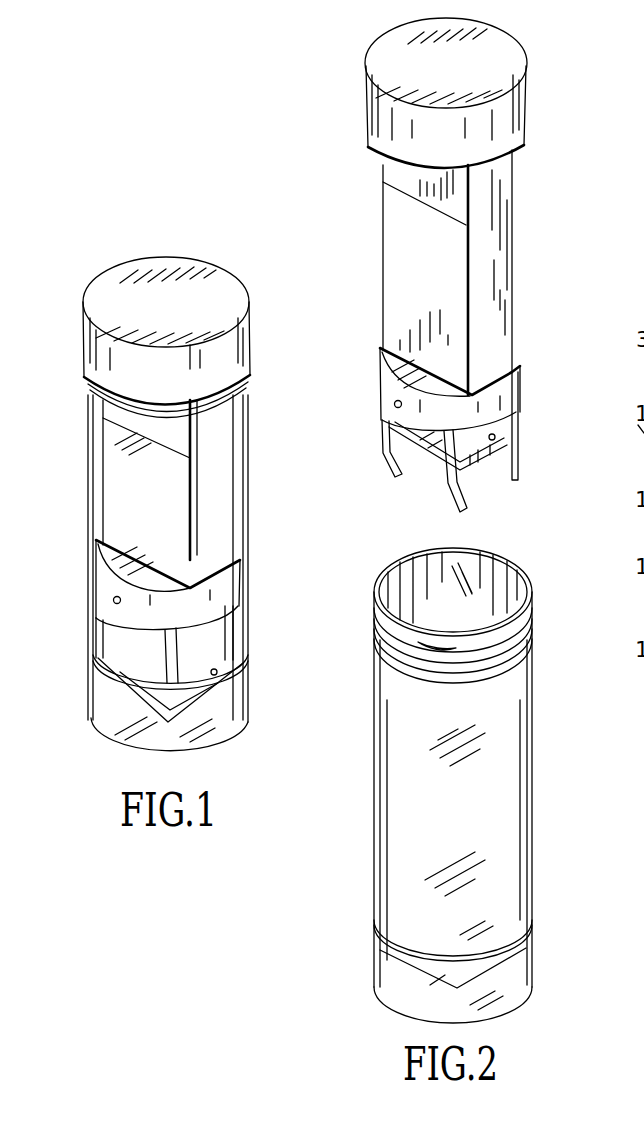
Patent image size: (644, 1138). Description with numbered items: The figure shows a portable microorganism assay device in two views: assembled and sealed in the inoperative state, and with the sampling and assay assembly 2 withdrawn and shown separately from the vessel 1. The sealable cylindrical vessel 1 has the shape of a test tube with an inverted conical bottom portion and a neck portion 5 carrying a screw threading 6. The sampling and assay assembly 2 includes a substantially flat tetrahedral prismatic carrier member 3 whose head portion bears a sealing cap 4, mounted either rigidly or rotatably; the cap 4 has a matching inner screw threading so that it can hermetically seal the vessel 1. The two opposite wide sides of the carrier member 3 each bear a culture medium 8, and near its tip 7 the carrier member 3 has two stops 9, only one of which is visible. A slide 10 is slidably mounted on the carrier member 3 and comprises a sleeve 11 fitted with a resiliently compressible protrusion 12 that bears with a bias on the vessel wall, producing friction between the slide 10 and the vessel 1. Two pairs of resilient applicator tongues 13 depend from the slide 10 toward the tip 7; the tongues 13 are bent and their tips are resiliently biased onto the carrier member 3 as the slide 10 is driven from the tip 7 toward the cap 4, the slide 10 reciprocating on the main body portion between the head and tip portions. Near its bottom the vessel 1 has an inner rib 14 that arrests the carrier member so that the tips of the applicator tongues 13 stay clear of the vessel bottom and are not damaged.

In FIG. 1, the sealable cylindrical vessel 1 is at (243, 458).
In FIG. 2, the sealable cylindrical vessel 1 is at (378, 825).
In FIG. 1, the sampling and assay assembly 2 is at (88, 440).
In FIG. 2, the sampling and assay assembly 2 is at (524, 214).
In FIG. 1, the carrier member 3 is at (103, 502).
In FIG. 2, the carrier member 3 is at (383, 238).
In FIG. 1, the sealing cap 4 is at (108, 305).
In FIG. 2, the sealing cap 4 is at (378, 100).
In FIG. 2, the neck portion 5 is at (528, 612).
In FIG. 2, the screw threading 6 is at (528, 656).
In FIG. 1, the tip 7 is at (210, 703).
In FIG. 2, the tip 7 is at (430, 448).
In FIG. 1, the culture medium 8 is at (147, 501).
In FIG. 2, the culture medium 8 is at (430, 265).
In FIG. 1, the stop 9 is at (218, 670).
In FIG. 2, the stop 9 is at (496, 441).
In FIG. 1, the slide 10 is at (169, 636).
In FIG. 2, the slide 10 is at (462, 416).
In FIG. 1, the sleeve 11 is at (104, 582).
In FIG. 2, the sleeve 11 is at (382, 383).
In FIG. 1, the resiliently compressible protrusion 12 is at (112, 601).
In FIG. 2, the resiliently compressible protrusion 12 is at (394, 404).
In FIG. 1, the applicator tongue 13 is at (160, 683).
In FIG. 2, the applicator tongue 13 is at (456, 510).
In FIG. 1, the inner rib 14 is at (246, 667).
In FIG. 2, the inner rib 14 is at (520, 947).